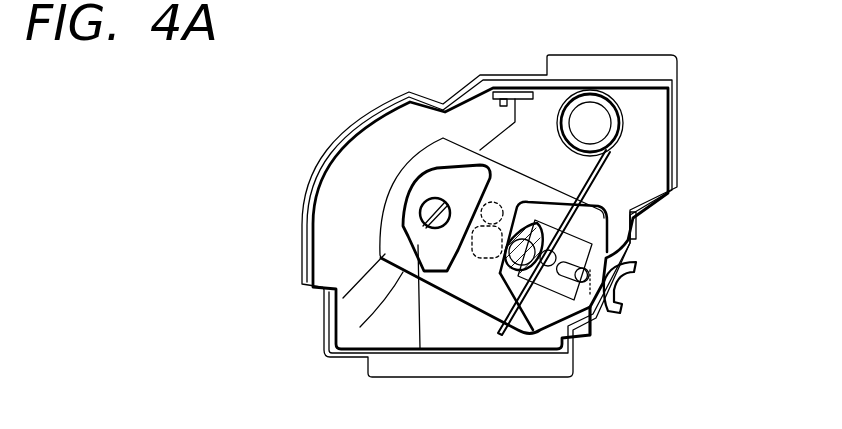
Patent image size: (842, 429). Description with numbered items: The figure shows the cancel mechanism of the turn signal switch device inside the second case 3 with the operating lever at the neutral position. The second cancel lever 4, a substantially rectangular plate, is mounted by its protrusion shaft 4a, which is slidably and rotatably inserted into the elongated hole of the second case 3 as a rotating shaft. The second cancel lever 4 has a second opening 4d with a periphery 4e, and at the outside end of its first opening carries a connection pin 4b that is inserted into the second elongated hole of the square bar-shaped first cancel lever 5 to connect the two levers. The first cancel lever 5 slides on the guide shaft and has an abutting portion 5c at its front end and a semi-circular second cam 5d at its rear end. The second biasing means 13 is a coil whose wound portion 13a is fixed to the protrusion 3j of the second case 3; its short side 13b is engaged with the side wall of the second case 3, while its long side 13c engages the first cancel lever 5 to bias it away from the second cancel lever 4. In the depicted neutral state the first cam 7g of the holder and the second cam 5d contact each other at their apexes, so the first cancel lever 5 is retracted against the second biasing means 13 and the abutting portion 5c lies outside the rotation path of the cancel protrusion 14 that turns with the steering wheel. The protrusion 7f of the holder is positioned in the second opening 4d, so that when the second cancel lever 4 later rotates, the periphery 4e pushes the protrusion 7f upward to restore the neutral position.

The second case 3 is at (305, 306).
The protrusion 3j is at (599, 108).
The second cancel lever 4 is at (335, 362).
The protrusion shaft 4a is at (472, 248).
The connection pin 4b is at (637, 242).
The second opening 4d is at (442, 175).
The periphery 4e is at (338, 300).
The first cancel lever 5 is at (550, 233).
The abutting portion 5c is at (596, 298).
The second cam 5d is at (490, 282).
The protrusion 7f is at (423, 200).
The first cam 7g is at (560, 275).
The second biasing means 13 is at (625, 130).
The wound portion 13a is at (622, 104).
The short side 13b is at (523, 90).
The long side 13c is at (604, 168).
The cancel protrusion 14 is at (638, 263).